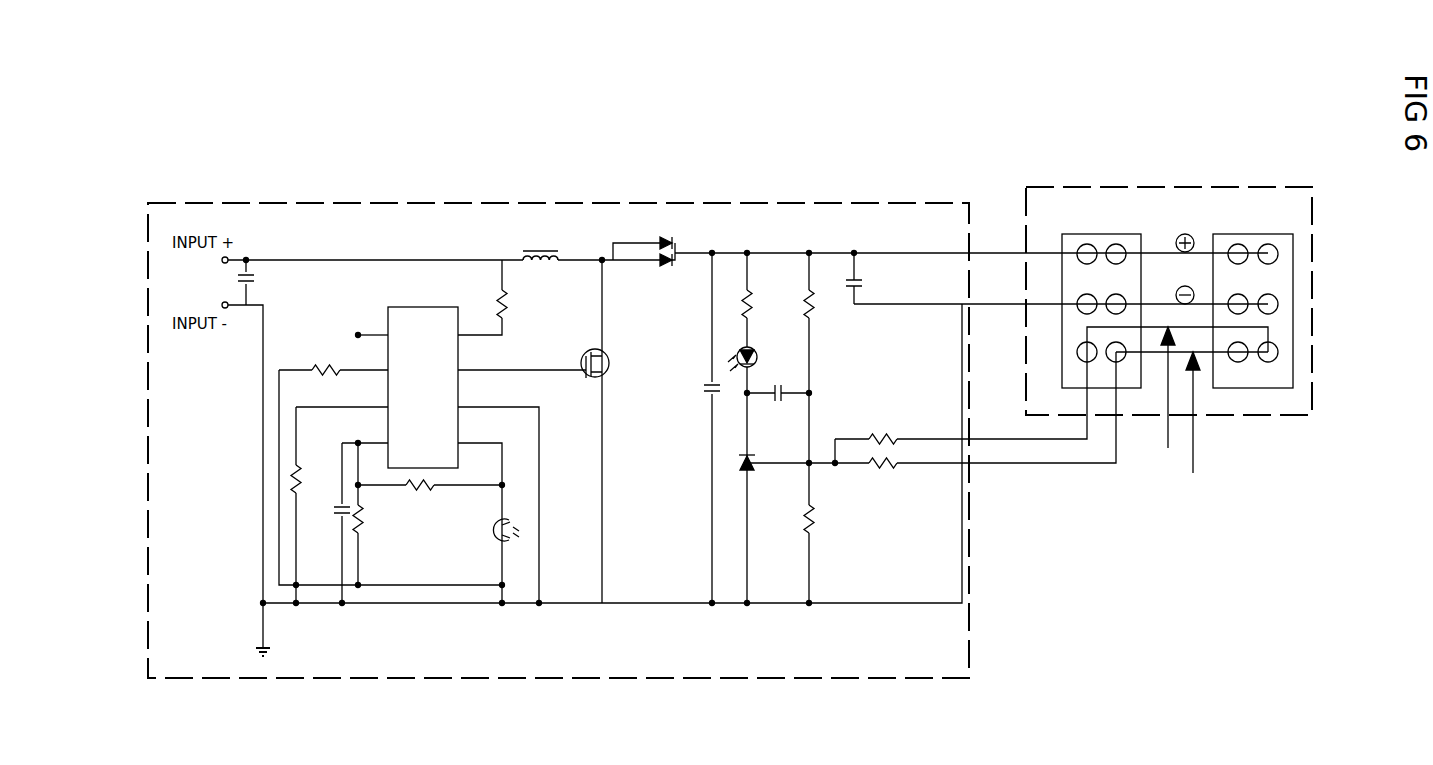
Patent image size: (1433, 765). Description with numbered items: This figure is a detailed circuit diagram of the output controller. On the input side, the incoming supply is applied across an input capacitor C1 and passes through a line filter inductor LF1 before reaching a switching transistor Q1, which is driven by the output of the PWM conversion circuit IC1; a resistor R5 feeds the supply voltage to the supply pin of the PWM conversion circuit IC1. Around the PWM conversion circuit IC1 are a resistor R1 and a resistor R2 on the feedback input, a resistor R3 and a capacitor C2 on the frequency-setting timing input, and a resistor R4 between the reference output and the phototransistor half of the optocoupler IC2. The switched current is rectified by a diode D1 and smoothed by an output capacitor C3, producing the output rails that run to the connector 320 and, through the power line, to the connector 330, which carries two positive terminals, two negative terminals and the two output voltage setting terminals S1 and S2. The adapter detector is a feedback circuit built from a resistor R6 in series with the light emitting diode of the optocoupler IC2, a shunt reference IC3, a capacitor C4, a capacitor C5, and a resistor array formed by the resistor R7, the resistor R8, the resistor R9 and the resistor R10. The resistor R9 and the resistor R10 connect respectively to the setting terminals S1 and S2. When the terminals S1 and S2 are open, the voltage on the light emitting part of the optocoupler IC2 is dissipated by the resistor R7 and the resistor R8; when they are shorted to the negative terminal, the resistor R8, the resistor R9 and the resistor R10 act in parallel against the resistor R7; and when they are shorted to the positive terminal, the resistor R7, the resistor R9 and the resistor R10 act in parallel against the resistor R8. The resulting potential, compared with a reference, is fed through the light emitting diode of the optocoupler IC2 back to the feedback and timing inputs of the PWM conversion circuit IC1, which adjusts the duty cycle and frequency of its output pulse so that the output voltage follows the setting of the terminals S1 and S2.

The input capacitor C1 is at (235, 282).
The line filter inductor LF1 is at (540, 243).
The resistor R5 is at (494, 297).
The PWM conversion circuit IC1 is at (407, 377).
The resistor R1 is at (333, 360).
The resistor R2 is at (339, 505).
The capacitor C2 is at (350, 523).
The resistor R3 is at (368, 514).
The resistor R4 is at (430, 494).
The optocoupler IC2 is at (632, 461).
The switching transistor Q1 is at (533, 431).
The rectifier diode D1 is at (940, 242).
The output capacitor C3 is at (722, 428).
The resistor R6 is at (759, 428).
The shunt regulator IC3 is at (760, 454).
The resistor R7 is at (821, 379).
The resistor R8 is at (797, 554).
The capacitor C4 is at (778, 385).
The capacitor C5 is at (864, 278).
The resistor R9 is at (961, 398).
The resistor R10 is at (975, 422).
The output voltage setting terminal S1 is at (1086, 399).
The output voltage setting terminal S2 is at (1098, 424).
The connector 320 is at (1101, 300).
The connector 330 is at (1253, 300).